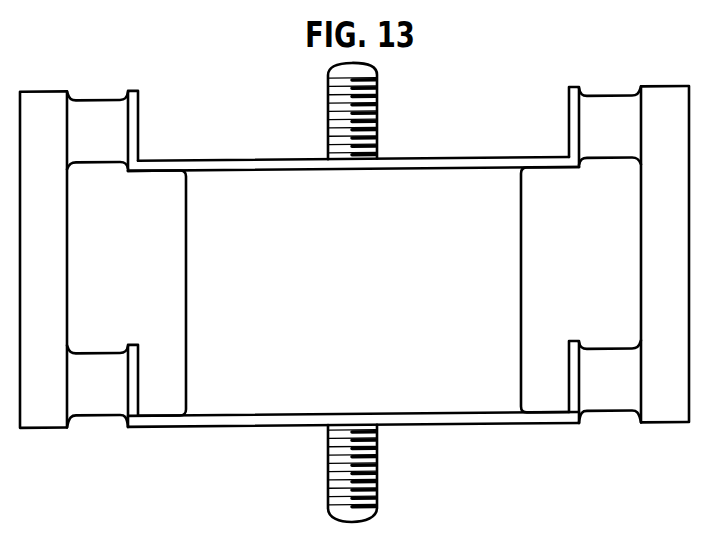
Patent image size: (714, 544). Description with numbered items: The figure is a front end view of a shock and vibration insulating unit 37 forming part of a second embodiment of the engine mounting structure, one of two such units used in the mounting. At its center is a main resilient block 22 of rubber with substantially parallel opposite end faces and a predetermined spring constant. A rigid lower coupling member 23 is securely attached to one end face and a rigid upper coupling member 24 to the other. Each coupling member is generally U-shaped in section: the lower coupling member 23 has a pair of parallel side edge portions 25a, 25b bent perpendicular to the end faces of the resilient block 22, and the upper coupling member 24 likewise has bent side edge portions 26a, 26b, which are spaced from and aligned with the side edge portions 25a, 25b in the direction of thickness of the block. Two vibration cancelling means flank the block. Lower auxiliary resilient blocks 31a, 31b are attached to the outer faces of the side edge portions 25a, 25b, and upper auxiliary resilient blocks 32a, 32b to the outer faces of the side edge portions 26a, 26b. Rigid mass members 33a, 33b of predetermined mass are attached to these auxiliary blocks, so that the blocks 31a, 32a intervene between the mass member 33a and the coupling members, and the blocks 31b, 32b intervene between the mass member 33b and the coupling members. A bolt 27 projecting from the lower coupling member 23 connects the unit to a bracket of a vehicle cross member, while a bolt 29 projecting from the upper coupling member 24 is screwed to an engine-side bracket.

The main resilient block 22 is at (521, 267).
The lower coupling member 23 is at (460, 429).
The upper coupling member 24 is at (258, 161).
The side edge portion 25a is at (138, 361).
The side edge portion 25b is at (569, 363).
The side edge portion 26a is at (138, 123).
The side edge portion 26b is at (569, 119).
The bolt 27 is at (378, 491).
The bolt 29 is at (378, 96).
The lower auxiliary resilient block 31a is at (97, 429).
The lower auxiliary resilient block 31b is at (608, 418).
The upper auxiliary resilient block 32a is at (96, 164).
The upper auxiliary resilient block 32b is at (606, 164).
The mass member 33a is at (68, 263).
The mass member 33b is at (641, 268).
The shock and vibration insulating unit 37 is at (434, 122).